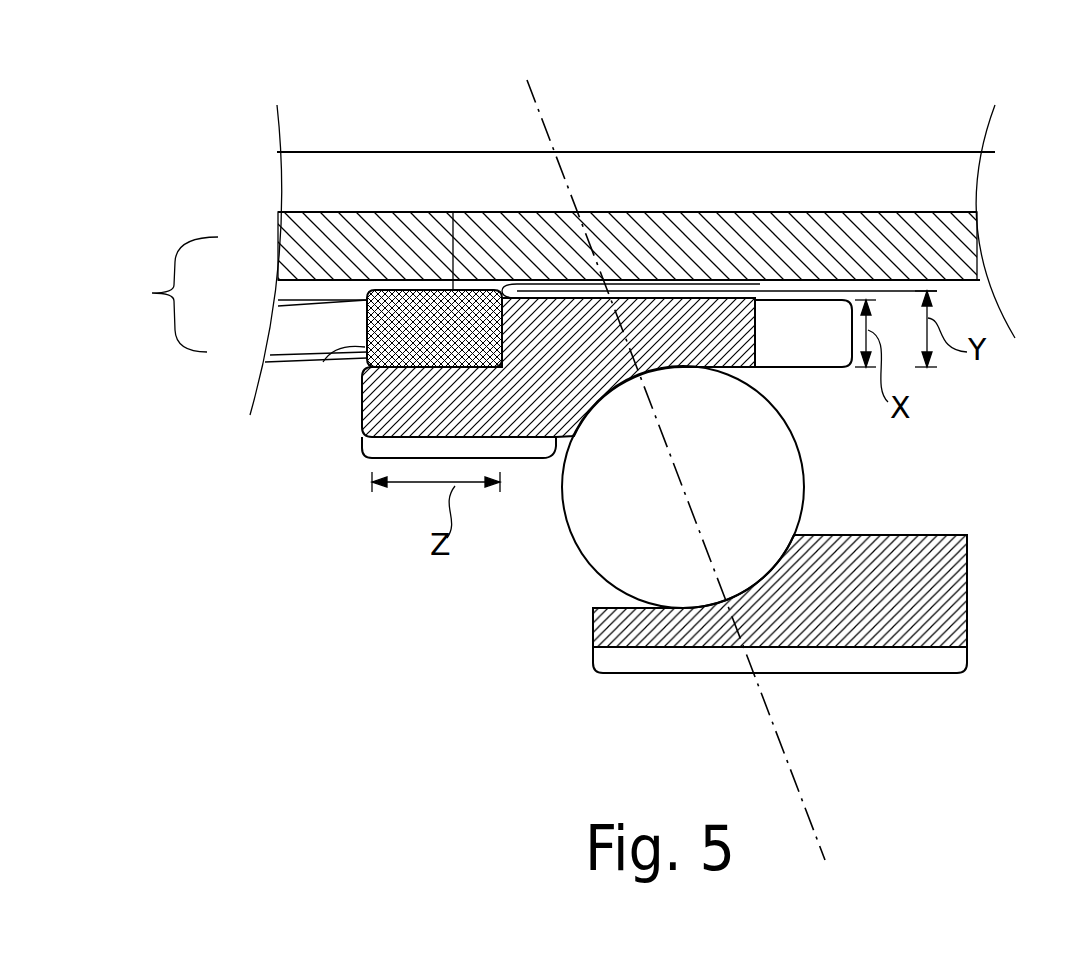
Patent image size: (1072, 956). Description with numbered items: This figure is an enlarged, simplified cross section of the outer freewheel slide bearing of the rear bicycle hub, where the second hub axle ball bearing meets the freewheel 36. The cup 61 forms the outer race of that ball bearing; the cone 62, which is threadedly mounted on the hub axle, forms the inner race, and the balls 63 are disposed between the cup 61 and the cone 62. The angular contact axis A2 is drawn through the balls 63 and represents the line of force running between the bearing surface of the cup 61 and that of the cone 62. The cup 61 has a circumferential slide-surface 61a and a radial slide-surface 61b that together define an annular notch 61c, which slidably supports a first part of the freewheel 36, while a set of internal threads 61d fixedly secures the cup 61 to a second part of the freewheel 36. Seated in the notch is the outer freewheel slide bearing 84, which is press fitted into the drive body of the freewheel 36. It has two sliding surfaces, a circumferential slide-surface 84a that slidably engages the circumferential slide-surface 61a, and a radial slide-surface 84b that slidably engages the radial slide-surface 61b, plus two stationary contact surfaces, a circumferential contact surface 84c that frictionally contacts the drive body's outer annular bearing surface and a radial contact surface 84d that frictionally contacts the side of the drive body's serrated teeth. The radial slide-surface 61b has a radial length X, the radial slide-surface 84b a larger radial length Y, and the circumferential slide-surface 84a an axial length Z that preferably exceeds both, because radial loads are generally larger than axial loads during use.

The freewheel 36 is at (808, 112).
The cup 61 is at (362, 400).
The circumferential slide-surface 61a is at (367, 333).
The radial slide-surface 61b is at (420, 292).
The annular notch 61c is at (258, 299).
The internal threads 61d is at (548, 462).
The cone 62 is at (968, 590).
The balls 63 is at (773, 466).
The outer freewheel slide bearing 84 is at (480, 292).
The circumferential slide-surface 84a is at (366, 447).
The radial slide-surface 84b is at (508, 298).
The circumferential contact surface 84c is at (447, 213).
The radial contact surface 84d is at (323, 362).
The angular contact axis A2 is at (795, 783).